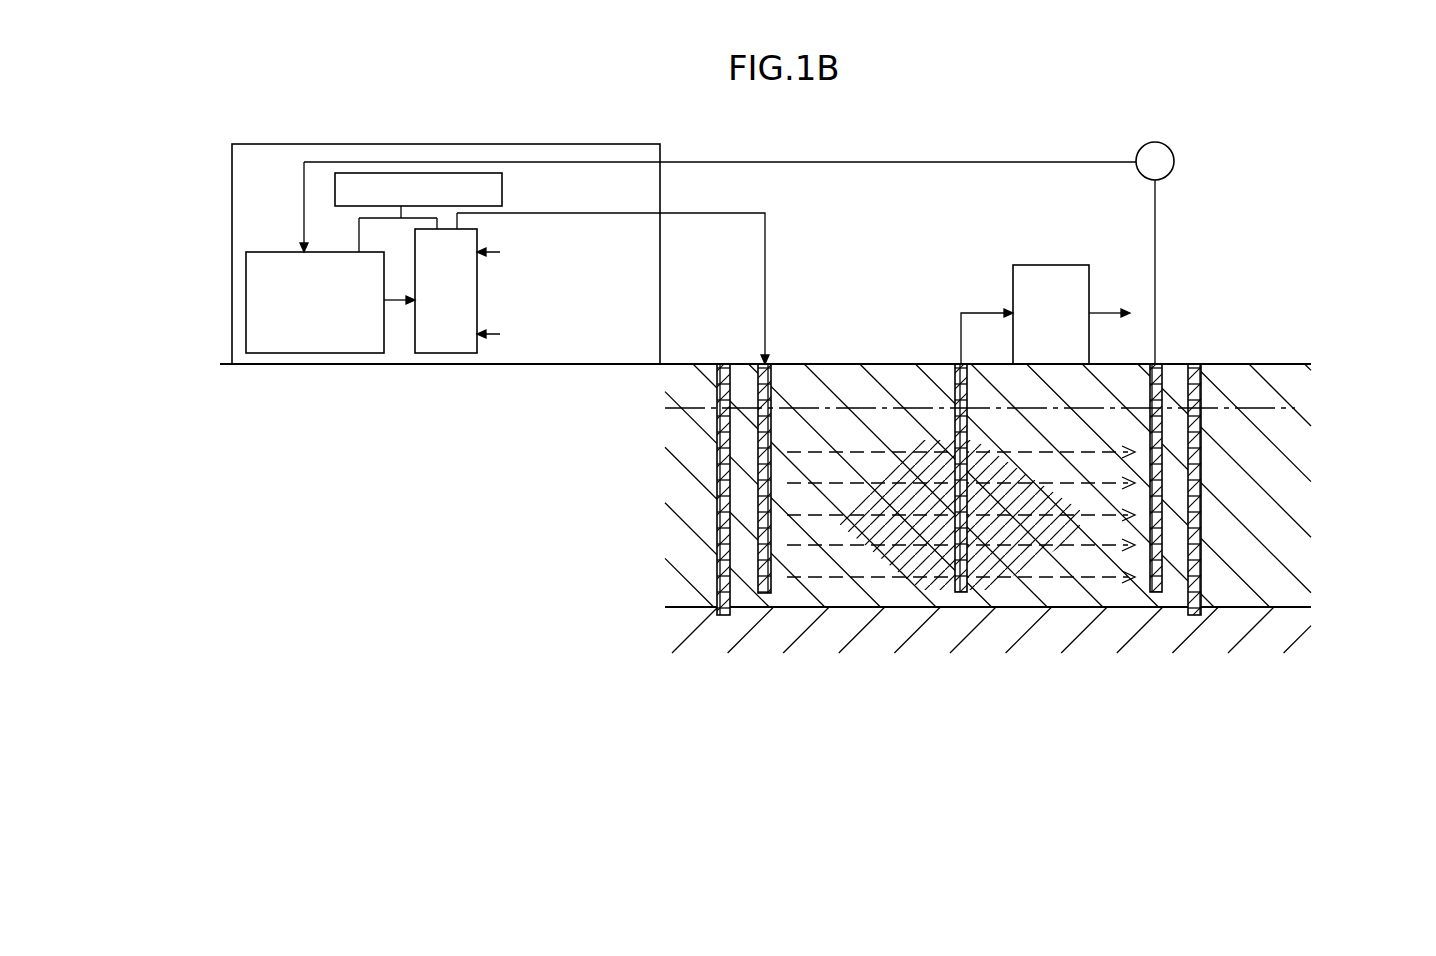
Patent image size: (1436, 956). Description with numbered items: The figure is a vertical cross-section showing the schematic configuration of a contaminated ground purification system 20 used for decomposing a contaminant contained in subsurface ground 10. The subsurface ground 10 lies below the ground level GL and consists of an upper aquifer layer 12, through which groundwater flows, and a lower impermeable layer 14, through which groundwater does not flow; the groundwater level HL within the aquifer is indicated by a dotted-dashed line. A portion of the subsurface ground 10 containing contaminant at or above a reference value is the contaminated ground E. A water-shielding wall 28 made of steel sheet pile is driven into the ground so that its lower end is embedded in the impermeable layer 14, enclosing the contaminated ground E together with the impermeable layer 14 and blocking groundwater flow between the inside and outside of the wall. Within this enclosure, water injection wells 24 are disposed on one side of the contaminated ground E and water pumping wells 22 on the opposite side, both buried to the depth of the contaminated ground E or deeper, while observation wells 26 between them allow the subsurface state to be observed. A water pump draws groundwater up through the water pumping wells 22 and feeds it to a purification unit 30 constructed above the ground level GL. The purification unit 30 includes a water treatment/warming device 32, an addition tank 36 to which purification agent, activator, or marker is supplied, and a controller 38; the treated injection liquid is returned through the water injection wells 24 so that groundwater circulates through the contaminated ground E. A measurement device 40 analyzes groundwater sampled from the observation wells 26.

The subsurface ground 10 is at (1039, 508).
The aquifer layer 12 is at (1280, 545).
The impermeable layer 14 is at (1018, 630).
The contaminated ground purification system 20 is at (1205, 237).
The water pumping wells 22 is at (1172, 364).
The water injection wells 24 is at (770, 590).
The observation wells 26 is at (963, 592).
The water-shielding wall 28 is at (717, 513).
The purification unit 30 is at (464, 281).
The water treatment/warming device 32 is at (312, 353).
The addition tank 36 is at (448, 353).
The controller 38 is at (335, 190).
The measurement device 40 is at (1053, 265).
The contaminated ground E is at (902, 500).
The ground level GL is at (1268, 364).
The groundwater level HL is at (1295, 408).